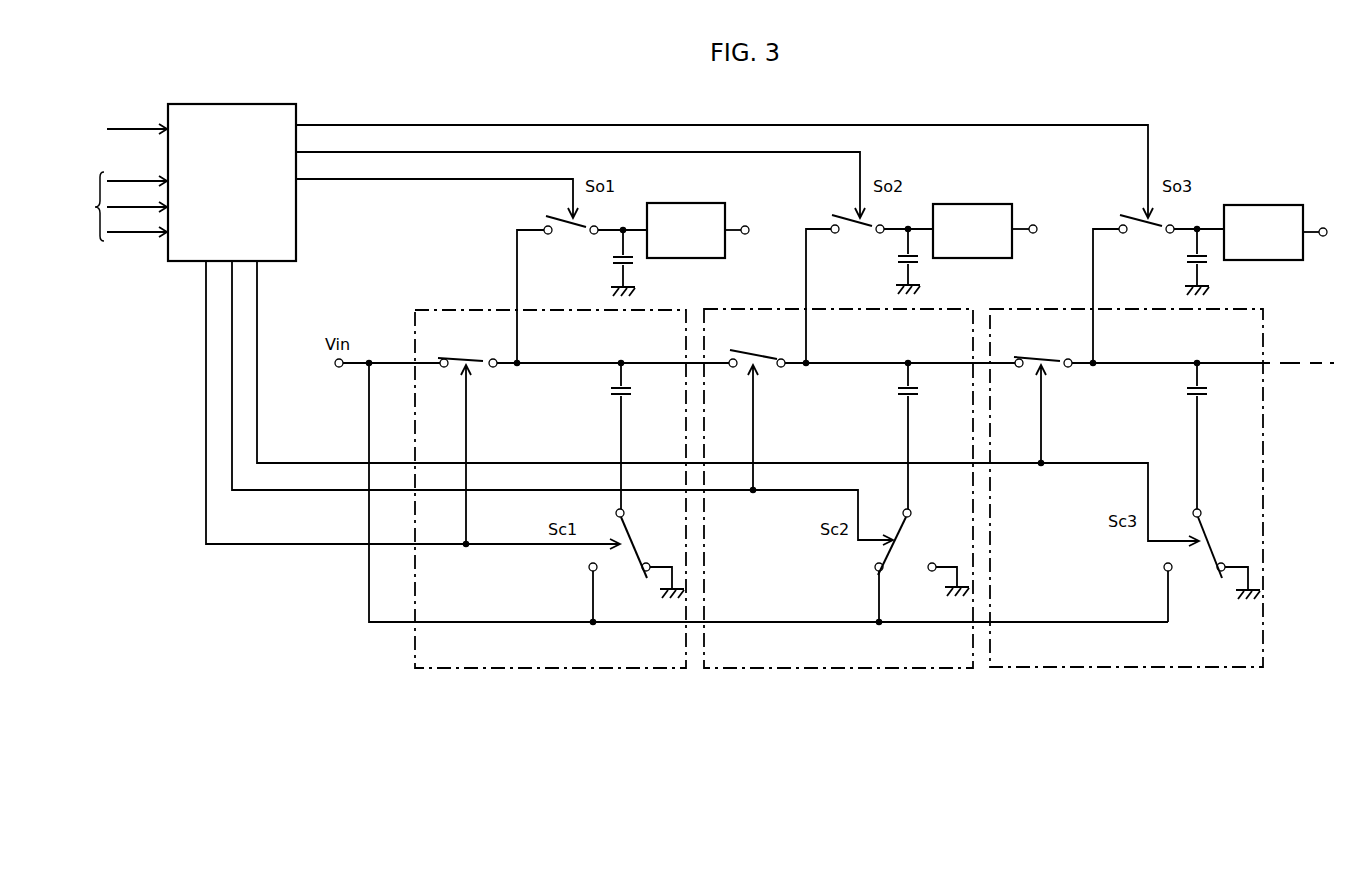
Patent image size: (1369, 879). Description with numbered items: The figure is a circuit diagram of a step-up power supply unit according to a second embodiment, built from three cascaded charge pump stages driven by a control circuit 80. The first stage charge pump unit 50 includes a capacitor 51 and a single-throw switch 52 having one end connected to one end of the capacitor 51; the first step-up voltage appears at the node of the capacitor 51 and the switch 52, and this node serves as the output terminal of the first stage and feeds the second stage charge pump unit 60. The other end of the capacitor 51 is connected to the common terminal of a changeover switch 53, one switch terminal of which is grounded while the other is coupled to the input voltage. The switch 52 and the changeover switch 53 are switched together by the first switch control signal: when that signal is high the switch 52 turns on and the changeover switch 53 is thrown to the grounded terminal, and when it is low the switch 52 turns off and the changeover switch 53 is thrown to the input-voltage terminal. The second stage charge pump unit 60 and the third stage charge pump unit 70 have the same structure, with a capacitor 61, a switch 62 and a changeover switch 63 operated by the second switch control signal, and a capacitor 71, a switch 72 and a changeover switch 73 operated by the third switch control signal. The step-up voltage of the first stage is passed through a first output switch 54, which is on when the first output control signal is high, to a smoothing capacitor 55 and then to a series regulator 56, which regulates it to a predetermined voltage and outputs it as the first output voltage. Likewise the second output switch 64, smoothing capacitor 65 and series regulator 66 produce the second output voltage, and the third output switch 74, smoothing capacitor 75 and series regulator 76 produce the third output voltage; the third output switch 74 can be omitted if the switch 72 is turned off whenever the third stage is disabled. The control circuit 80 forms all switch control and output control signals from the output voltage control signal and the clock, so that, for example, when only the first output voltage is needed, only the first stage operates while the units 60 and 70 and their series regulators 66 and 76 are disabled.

The control circuit 80 is at (303, 215).
The first stage charge pump unit 50 is at (452, 670).
The capacitor 51 is at (609, 392).
The single-throw switch 52 is at (458, 347).
The changeover switch 53 is at (620, 580).
The first output switch 54 is at (572, 240).
The smoothing capacitor 55 is at (612, 260).
The series regulator 56 is at (682, 198).
The second stage charge pump unit 60 is at (740, 670).
The capacitor 61 is at (895, 392).
The switch 62 is at (746, 347).
The changeover switch 63 is at (920, 560).
The second output switch 64 is at (858, 240).
The smoothing capacitor 65 is at (898, 258).
The series regulator 66 is at (970, 198).
The third stage charge pump unit 70 is at (1026, 670).
The capacitor 71 is at (1184, 392).
The switch 72 is at (1034, 347).
The changeover switch 73 is at (1196, 580).
The third output switch 74 is at (1147, 240).
The smoothing capacitor 75 is at (1188, 260).
The series regulator 76 is at (1260, 199).